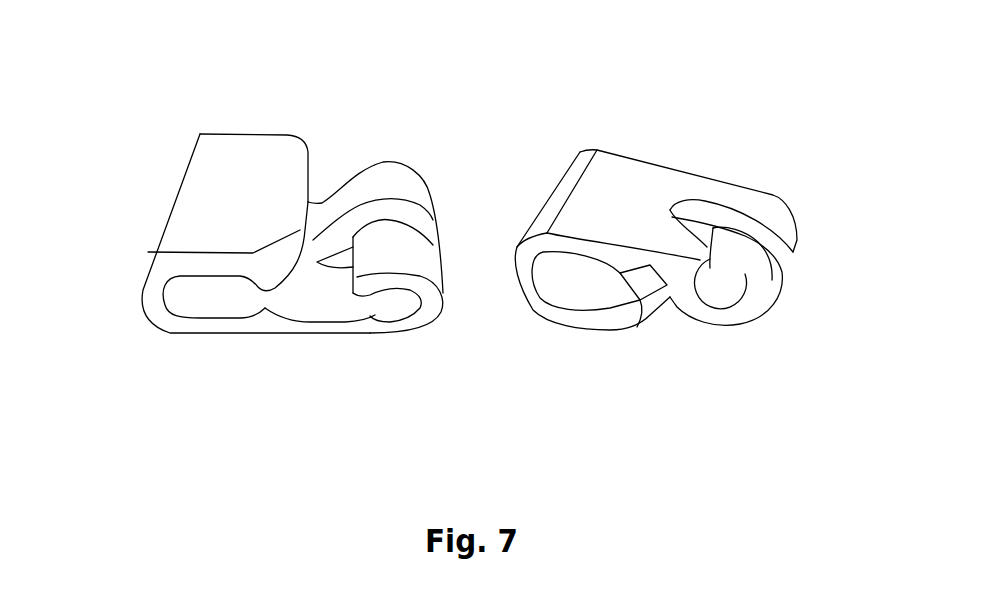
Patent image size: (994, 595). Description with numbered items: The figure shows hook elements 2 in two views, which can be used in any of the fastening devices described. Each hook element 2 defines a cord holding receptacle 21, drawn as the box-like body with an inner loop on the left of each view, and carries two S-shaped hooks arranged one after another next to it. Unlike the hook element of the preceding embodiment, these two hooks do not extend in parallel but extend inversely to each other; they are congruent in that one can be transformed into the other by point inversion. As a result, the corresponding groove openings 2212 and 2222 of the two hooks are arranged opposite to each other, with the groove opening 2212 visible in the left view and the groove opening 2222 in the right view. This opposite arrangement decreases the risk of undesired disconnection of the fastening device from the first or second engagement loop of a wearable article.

The hook element 2 is at (467, 253).
The cord holding receptacle 21 is at (175, 300).
The groove opening 2212 is at (367, 308).
The groove opening 2222 is at (698, 257).